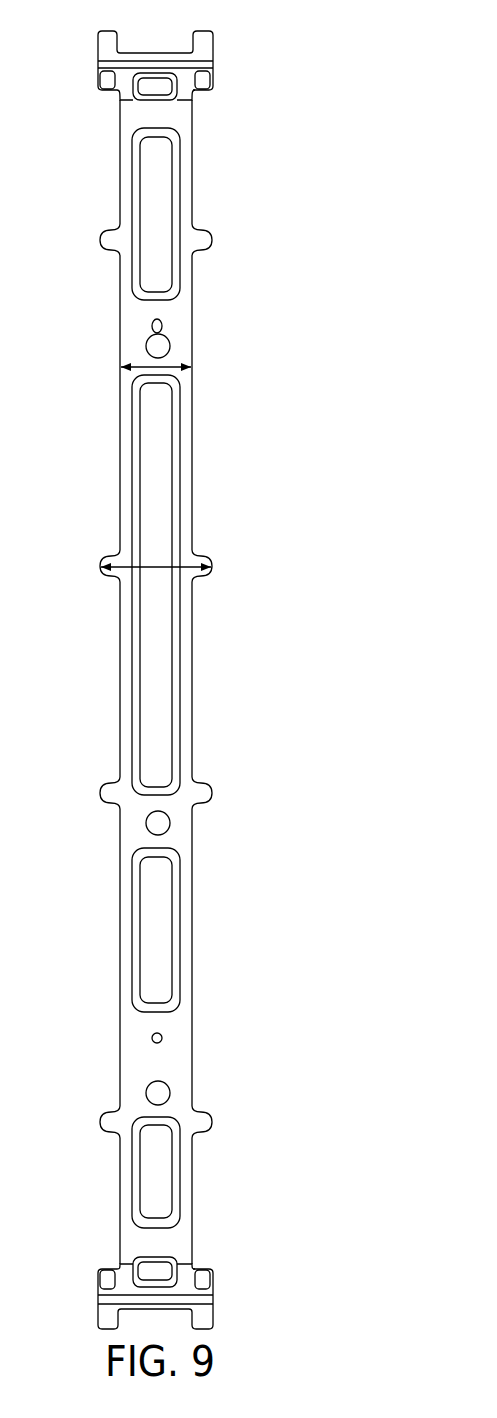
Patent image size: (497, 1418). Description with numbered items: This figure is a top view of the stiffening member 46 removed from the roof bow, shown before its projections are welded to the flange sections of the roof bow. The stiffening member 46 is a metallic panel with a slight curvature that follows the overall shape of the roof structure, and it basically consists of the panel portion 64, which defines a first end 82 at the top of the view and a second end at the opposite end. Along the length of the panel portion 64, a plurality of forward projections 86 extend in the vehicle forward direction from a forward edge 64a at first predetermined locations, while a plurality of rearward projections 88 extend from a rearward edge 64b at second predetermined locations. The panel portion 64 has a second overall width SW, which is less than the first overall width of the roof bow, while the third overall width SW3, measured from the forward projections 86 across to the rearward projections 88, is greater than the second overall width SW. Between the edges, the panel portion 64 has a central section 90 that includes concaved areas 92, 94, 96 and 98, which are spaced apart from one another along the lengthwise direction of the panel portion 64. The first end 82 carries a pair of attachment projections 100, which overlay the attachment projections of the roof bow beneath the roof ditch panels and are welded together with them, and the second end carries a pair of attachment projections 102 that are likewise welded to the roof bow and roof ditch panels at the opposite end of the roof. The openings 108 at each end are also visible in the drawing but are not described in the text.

The stiffening member 46 is at (226, 176).
The panel portion 64 is at (138, 115).
The forward edge 64a is at (120, 313).
The rearward edge 64b is at (192, 313).
The first end 82 is at (176, 62).
The forward projections 86 is at (110, 241).
The rearward projections 88 is at (200, 241).
The central section 90 is at (157, 1062).
The concaved area 92 is at (153, 187).
The concaved area 94 is at (153, 660).
The concaved area 96 is at (153, 945).
The concaved area 98 is at (160, 1182).
The attachment projections 100 is at (105, 44).
The attachment projections 102 is at (200, 1292).
The opening 108 is at (152, 88).
The second overall width SW is at (155, 377).
The third overall width SW3 is at (152, 568).